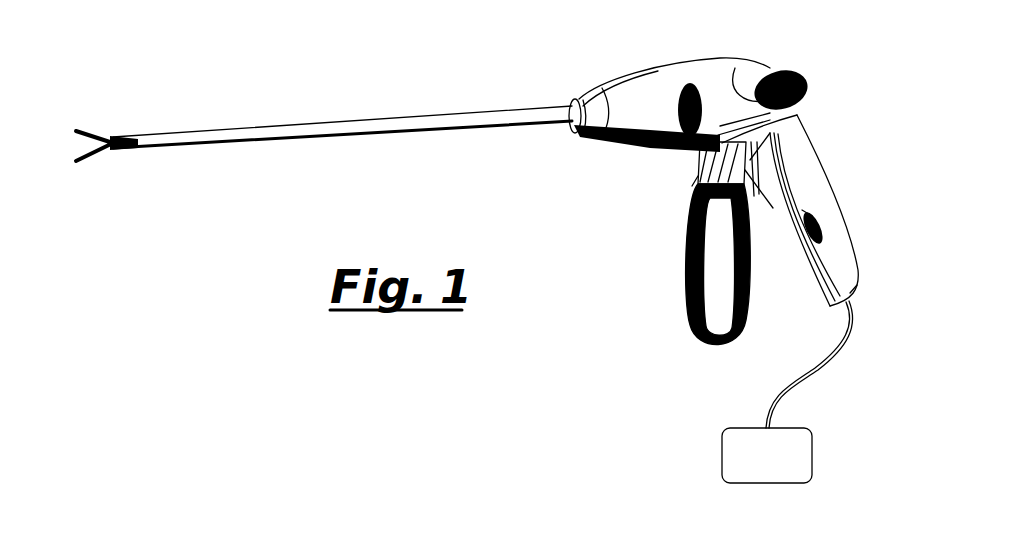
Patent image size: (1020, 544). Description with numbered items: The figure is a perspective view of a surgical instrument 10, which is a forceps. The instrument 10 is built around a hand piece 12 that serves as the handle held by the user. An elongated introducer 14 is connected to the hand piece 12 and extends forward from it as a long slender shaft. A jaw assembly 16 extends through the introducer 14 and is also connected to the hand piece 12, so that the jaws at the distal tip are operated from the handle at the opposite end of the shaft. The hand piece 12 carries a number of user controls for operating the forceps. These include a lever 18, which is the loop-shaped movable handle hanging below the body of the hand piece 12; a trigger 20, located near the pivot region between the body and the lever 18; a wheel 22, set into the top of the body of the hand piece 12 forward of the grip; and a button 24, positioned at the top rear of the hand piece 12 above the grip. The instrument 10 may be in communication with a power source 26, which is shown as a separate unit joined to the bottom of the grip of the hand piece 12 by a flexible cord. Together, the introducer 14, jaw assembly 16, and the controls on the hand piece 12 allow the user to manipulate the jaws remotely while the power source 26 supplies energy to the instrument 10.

The instrument 10 is at (352, 55).
The hand piece 12 is at (645, 48).
The introducer 14 is at (405, 127).
The jaw assembly 16 is at (109, 110).
The lever 18 is at (690, 270).
The trigger 20 is at (707, 167).
The wheel 22 is at (692, 84).
The button 24 is at (782, 86).
The power source 26 is at (779, 469).